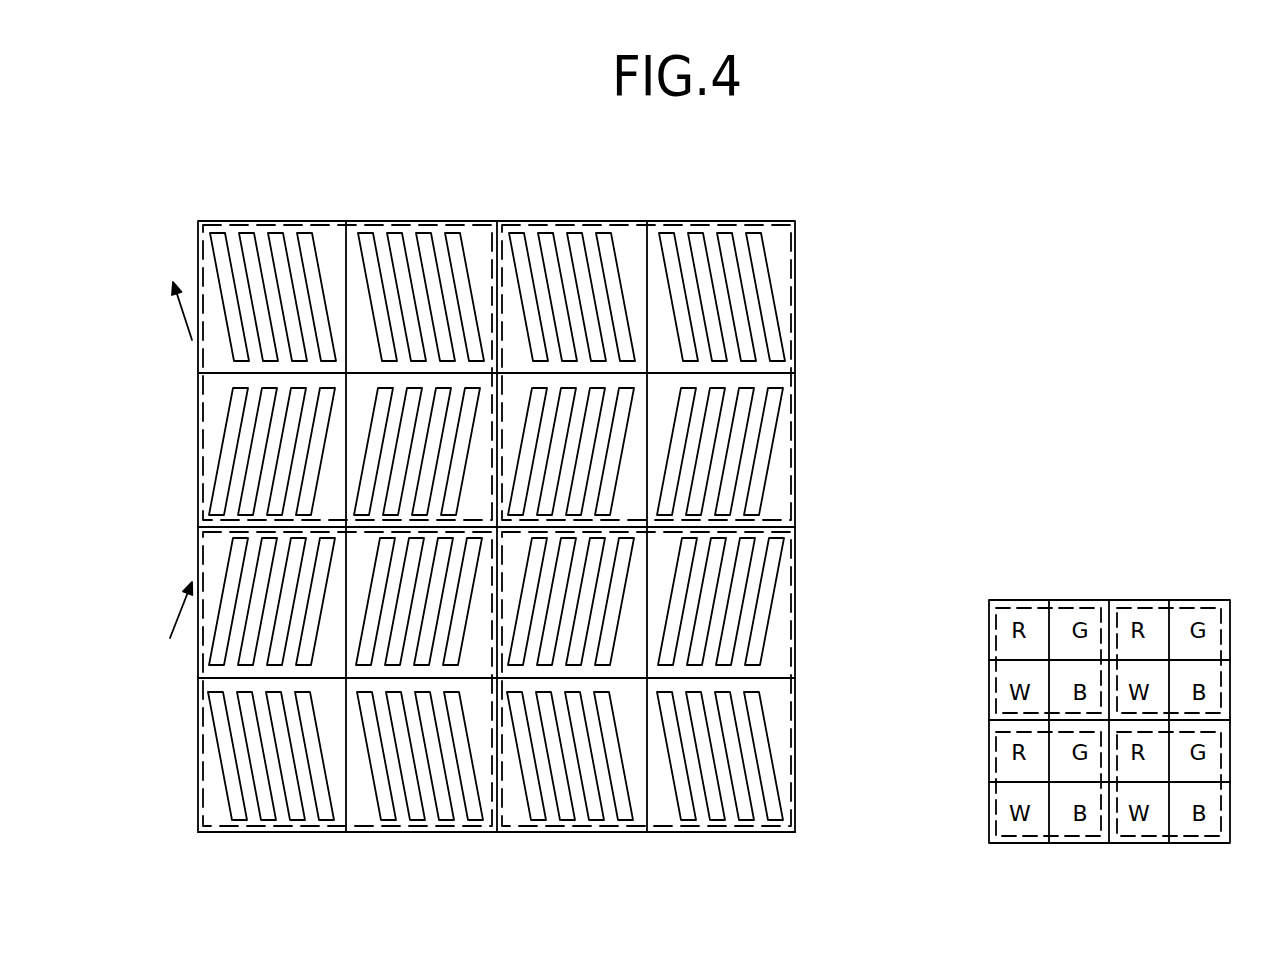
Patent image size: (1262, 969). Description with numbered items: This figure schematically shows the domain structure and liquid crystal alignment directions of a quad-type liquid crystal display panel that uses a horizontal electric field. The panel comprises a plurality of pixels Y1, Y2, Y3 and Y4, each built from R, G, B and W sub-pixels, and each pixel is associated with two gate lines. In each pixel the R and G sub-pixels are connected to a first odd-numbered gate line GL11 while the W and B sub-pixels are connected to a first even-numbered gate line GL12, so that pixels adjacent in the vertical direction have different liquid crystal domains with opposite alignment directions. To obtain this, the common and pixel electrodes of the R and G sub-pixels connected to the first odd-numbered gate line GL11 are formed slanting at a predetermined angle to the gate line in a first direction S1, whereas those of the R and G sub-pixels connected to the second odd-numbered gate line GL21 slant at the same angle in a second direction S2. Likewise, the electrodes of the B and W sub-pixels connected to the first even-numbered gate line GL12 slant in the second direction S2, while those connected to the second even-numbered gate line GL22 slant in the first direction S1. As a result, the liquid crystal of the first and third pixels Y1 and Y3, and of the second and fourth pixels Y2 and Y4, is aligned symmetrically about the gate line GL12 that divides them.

The first direction S1 is at (168, 311).
The second direction S2 is at (168, 610).
The first pixel Y1 is at (202, 478).
The second pixel Y2 is at (790, 303).
The third pixel Y3 is at (202, 778).
The fourth pixel Y4 is at (790, 607).
The first odd-numbered gate line GL11 is at (787, 378).
The first even-numbered gate line GL12 is at (787, 530).
The second odd-numbered gate line GL21 is at (787, 682).
The second even-numbered gate line GL22 is at (780, 835).